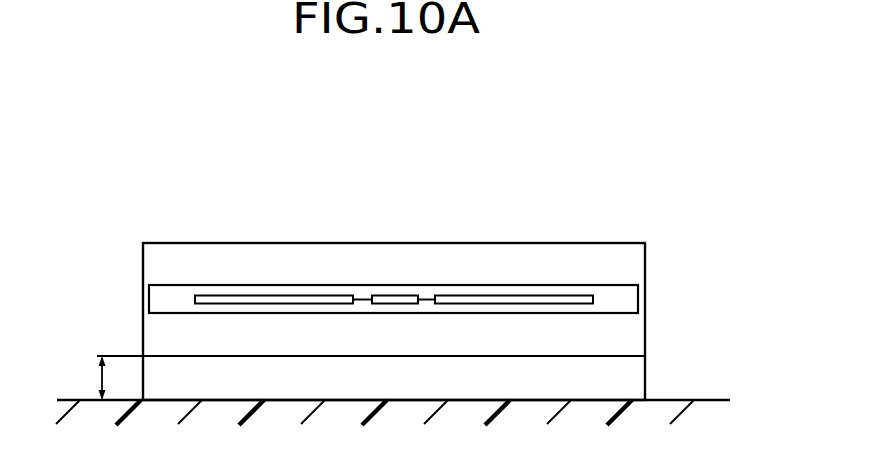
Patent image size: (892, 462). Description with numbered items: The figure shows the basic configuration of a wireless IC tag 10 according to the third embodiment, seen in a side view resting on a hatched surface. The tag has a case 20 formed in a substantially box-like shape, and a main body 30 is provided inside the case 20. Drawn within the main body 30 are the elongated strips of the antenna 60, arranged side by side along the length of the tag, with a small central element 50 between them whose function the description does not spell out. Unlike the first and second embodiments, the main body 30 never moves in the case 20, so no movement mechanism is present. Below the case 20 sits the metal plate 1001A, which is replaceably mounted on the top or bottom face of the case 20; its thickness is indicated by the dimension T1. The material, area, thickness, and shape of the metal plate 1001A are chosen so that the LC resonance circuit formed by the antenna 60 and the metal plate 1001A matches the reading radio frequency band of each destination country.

The wireless IC tag 10 is at (580, 136).
The case 20 is at (627, 243).
The main body 30 is at (645, 293).
The center electrode 50 is at (395, 295).
The antenna 60 is at (273, 295).
The metal plate 1001A is at (645, 373).
The thickness T1 is at (103, 378).